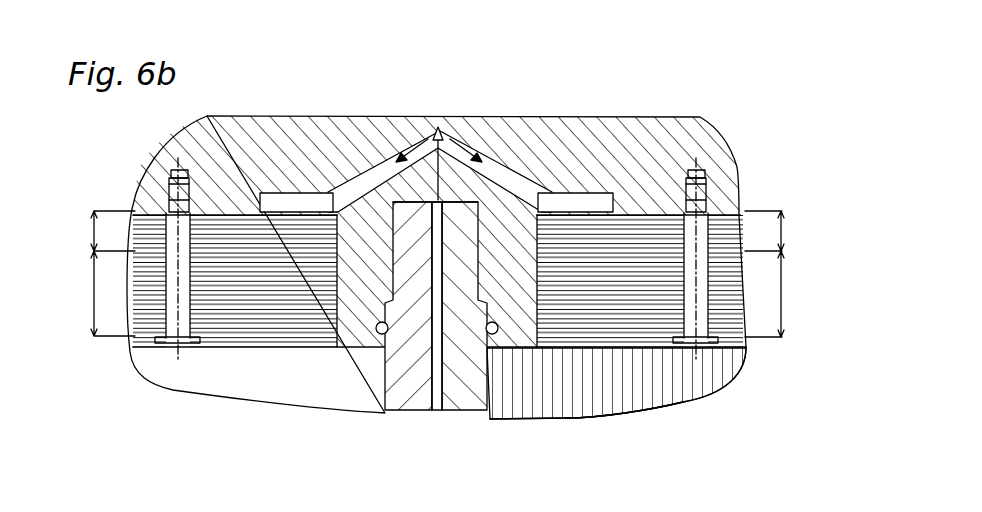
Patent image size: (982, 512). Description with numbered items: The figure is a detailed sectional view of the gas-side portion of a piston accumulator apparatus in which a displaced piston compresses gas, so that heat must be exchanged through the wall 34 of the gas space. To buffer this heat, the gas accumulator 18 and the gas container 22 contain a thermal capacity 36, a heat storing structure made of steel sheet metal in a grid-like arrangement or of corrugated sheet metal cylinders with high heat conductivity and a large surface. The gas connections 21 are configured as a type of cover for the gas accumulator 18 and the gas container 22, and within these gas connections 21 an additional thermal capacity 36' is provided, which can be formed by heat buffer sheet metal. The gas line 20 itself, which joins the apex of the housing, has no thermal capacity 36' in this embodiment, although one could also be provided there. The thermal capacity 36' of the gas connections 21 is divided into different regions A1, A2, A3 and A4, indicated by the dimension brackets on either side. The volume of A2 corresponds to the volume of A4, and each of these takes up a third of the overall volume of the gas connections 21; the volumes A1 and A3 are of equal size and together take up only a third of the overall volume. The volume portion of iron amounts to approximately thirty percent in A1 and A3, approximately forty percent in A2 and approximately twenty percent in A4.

The wall 34 is at (253, 140).
The gas line 20 is at (457, 150).
The gas connections 21 is at (630, 235).
The gas accumulator 18 is at (190, 383).
The gas container 22 is at (570, 393).
The thermal capacity 36 is at (657, 433).
The thermal capacity 36' is at (399, 401).
The region A1 is at (93, 231).
The region A2 is at (93, 293).
The region A3 is at (790, 233).
The region A4 is at (790, 294).